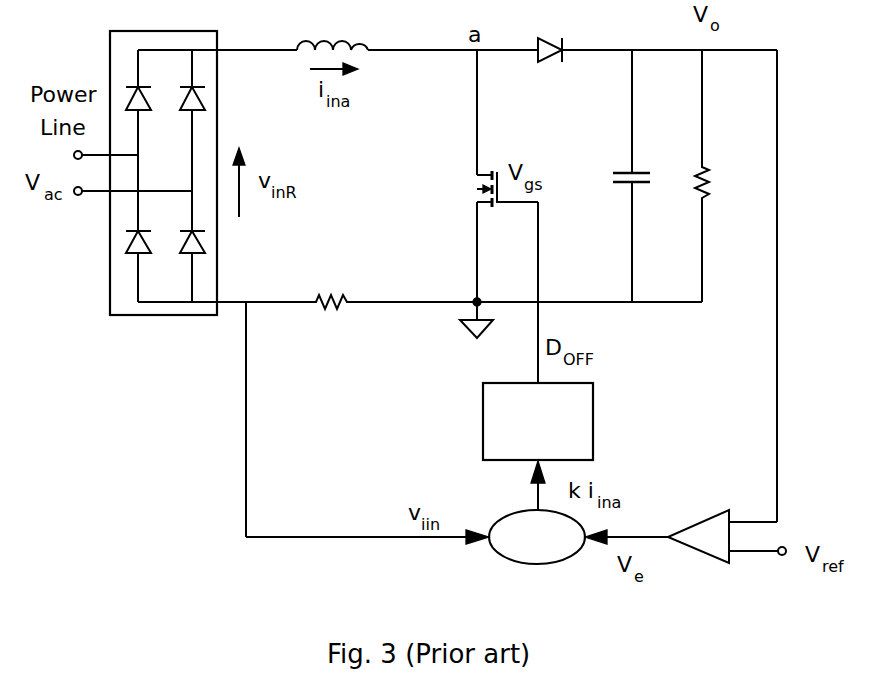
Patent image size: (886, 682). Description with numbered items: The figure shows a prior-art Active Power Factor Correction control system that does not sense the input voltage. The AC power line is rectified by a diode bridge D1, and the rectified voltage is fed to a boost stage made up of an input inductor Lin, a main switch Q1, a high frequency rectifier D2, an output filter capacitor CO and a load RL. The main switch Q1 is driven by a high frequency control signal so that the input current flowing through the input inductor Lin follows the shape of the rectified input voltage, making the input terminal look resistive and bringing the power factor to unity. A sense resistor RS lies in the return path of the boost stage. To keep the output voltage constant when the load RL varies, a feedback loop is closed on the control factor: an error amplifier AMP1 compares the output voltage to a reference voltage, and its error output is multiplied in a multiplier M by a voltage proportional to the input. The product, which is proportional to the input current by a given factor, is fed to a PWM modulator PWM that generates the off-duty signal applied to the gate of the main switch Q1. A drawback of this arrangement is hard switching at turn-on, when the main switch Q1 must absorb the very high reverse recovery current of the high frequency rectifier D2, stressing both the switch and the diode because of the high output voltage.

The diode bridge D1 is at (145, 193).
The input inductor Lin is at (332, 25).
The high frequency rectifier D2 is at (545, 31).
The main switch Q1 is at (487, 194).
The output filter capacitor CO is at (616, 176).
The load RL is at (725, 176).
The current sense resistor R'S RS is at (331, 324).
The PWM modulator PWM is at (538, 421).
The multiplier M is at (537, 537).
The error amplifier AMP1 is at (727, 519).